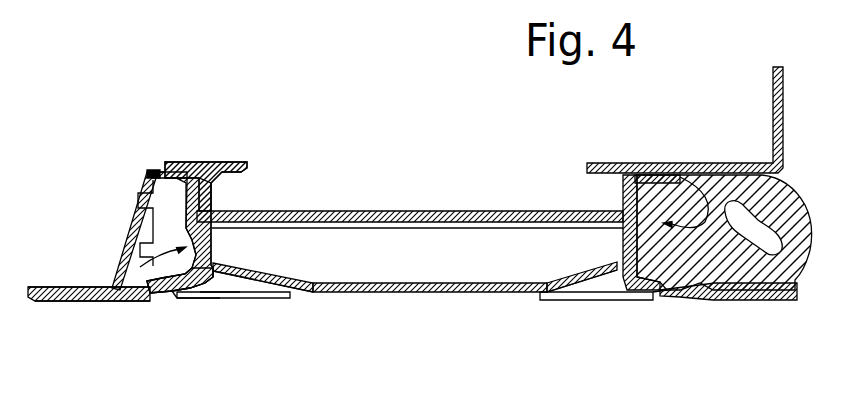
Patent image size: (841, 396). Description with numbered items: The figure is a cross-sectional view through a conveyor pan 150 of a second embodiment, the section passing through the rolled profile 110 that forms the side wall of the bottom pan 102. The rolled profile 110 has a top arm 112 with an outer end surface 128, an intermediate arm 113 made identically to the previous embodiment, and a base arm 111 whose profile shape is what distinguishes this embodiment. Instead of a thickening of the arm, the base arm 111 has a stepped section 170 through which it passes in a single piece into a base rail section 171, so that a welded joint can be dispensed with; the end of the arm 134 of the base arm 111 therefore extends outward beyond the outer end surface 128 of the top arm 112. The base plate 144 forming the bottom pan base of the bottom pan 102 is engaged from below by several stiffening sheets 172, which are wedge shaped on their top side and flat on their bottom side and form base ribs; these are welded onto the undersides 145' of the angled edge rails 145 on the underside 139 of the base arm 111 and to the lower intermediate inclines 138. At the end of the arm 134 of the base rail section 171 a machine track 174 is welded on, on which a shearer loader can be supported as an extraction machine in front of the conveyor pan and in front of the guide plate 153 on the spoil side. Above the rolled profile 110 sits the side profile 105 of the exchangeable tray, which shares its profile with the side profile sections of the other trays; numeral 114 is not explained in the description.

The conveyor pan 150 is at (404, 85).
The bottom pan 102 is at (442, 266).
The rolled profile 110 is at (141, 159).
The top arm 112 is at (152, 175).
The side profile 105 is at (233, 162).
The outer end surface 128 is at (148, 176).
The guide plate 153 is at (123, 230).
The bracket 114 is at (143, 265).
The end of the arm 134 is at (97, 286).
The machine track 174 is at (67, 302).
The base rail section 171 is at (123, 302).
The stepped section 170 is at (157, 302).
The base arm 111 is at (168, 292).
The stiffening sheets 172 is at (230, 290).
The underside 139 is at (193, 298).
The lower intermediate inclines 138 is at (217, 298).
The angled edge rails 145 is at (415, 263).
The undersides of the angled edge rails 145' is at (415, 301).
The base plate 144 is at (420, 292).
The intermediate arm 113 is at (707, 195).